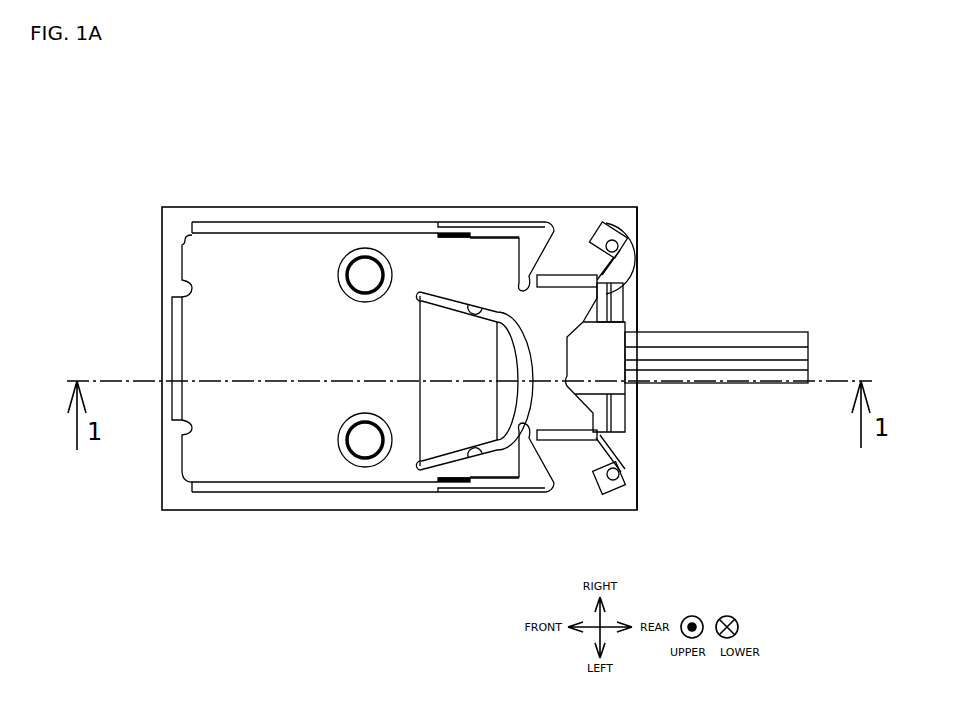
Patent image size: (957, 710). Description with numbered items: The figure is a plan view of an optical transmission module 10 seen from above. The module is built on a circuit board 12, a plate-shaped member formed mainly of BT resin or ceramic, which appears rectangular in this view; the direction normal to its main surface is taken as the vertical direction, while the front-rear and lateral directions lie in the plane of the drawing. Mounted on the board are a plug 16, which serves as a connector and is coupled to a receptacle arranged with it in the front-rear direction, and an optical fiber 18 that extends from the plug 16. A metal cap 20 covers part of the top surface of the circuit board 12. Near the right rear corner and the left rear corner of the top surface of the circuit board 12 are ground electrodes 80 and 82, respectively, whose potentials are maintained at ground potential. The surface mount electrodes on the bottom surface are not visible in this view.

The optical transmission module 10 is at (146, 158).
The circuit board 12 is at (590, 212).
The plug 16 is at (613, 302).
The optical fiber 18 is at (752, 337).
The metal cap 20 is at (278, 260).
The ground electrode 80 is at (612, 486).
The ground electrode 82 is at (603, 232).